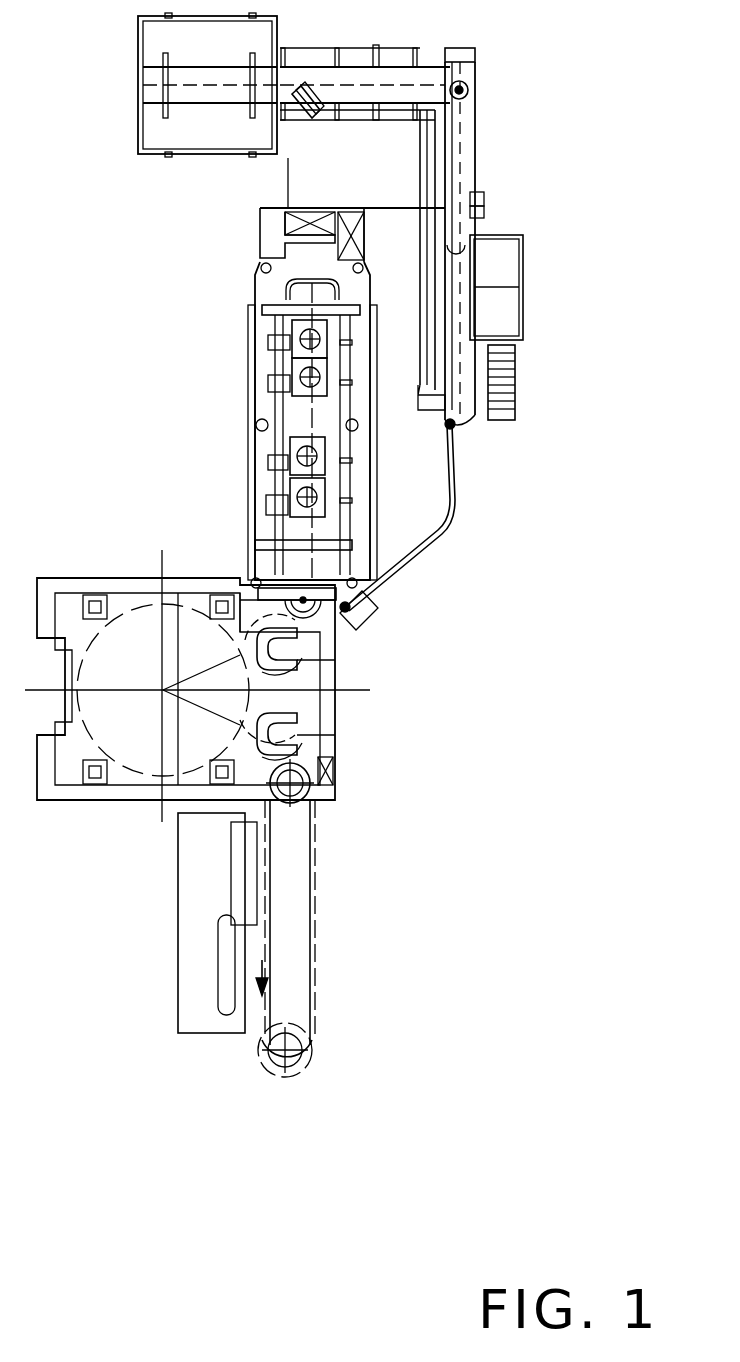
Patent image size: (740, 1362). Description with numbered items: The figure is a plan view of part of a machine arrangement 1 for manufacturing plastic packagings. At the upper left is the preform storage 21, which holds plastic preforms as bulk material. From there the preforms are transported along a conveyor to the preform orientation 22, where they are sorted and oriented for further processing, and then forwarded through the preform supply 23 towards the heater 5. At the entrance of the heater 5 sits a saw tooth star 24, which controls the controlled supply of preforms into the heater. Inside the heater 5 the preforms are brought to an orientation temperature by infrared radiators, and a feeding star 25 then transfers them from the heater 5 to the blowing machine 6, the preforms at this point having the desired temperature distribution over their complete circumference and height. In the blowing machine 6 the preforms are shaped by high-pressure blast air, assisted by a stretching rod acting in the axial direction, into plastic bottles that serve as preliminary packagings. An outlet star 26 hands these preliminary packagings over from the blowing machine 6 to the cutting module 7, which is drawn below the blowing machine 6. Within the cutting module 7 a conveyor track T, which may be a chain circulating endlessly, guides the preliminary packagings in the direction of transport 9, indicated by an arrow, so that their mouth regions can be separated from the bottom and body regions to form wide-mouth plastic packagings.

The installation 1 is at (522, 709).
The heater 5 is at (255, 402).
The blowing machine 6 is at (78, 605).
The cutting module 7 is at (250, 940).
The direction of transport 9 is at (262, 961).
The preform storage 21 is at (158, 40).
The preform orientation 22 is at (466, 156).
The preform supply 23 is at (420, 545).
The saw tooth star 24 is at (300, 632).
The feeding star 25 is at (255, 640).
The outlet star 26 is at (300, 733).
The conveyor track T is at (258, 1025).